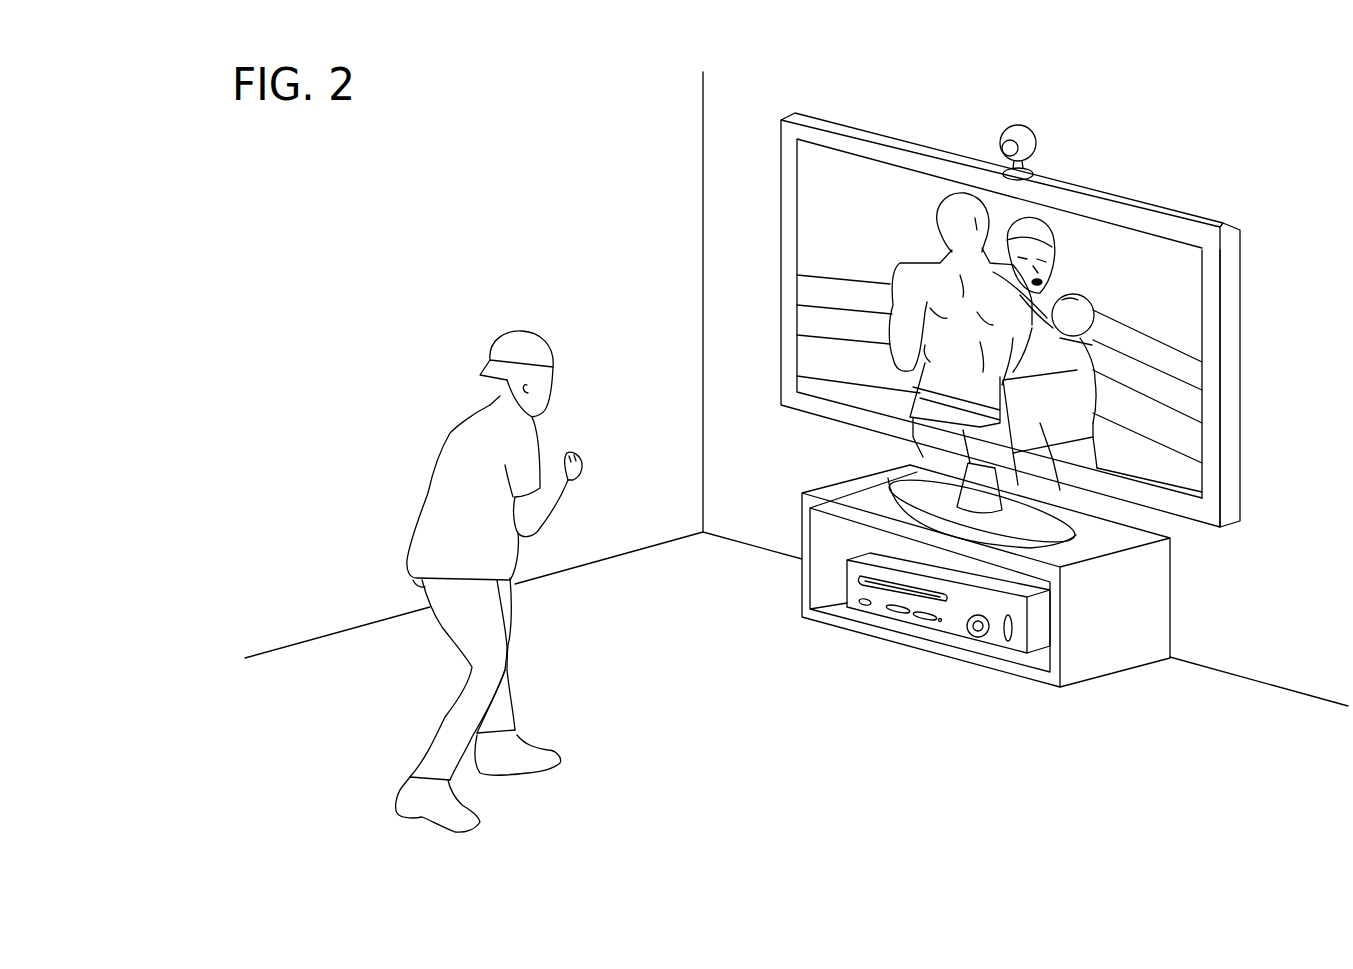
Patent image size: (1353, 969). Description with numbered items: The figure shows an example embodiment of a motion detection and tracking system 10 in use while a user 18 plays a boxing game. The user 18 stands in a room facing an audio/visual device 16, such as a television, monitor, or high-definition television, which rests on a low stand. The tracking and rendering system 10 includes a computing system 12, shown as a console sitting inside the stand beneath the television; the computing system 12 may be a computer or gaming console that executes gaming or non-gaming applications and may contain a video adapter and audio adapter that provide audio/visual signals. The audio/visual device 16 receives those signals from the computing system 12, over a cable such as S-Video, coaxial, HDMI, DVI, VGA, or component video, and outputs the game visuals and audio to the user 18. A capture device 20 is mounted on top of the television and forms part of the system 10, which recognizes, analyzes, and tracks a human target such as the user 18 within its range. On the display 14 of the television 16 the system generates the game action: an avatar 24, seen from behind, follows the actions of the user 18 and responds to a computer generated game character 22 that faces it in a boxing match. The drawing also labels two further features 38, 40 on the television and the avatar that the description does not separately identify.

The motion detection and tracking system 10 is at (1112, 92).
The computing system 12 is at (953, 640).
The display 14 is at (1203, 440).
The audio/visual device 16 is at (1029, 333).
The user 18 is at (512, 688).
The capture device 20 is at (1040, 148).
The computer generated game character 22 is at (1055, 268).
The avatar 24 is at (893, 278).
The display bezel 38 is at (1240, 310).
The avatar head 40 is at (980, 231).